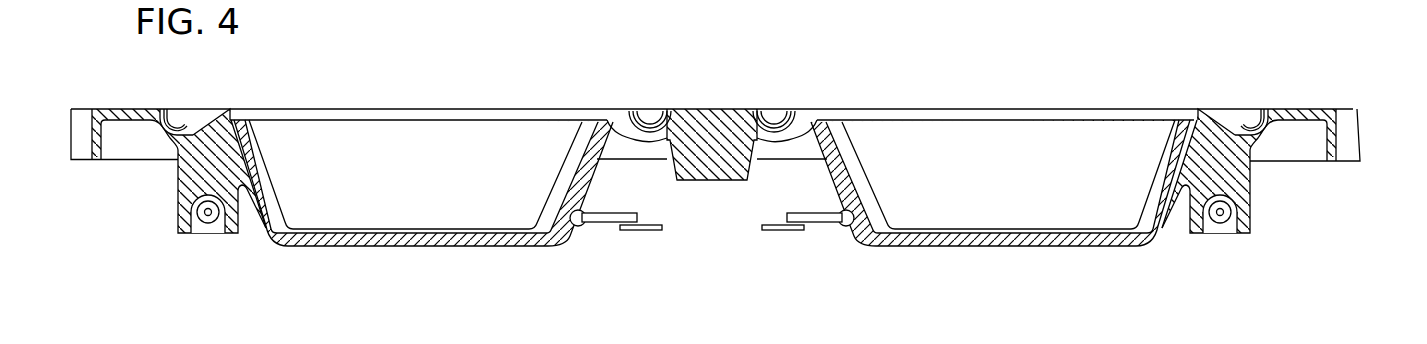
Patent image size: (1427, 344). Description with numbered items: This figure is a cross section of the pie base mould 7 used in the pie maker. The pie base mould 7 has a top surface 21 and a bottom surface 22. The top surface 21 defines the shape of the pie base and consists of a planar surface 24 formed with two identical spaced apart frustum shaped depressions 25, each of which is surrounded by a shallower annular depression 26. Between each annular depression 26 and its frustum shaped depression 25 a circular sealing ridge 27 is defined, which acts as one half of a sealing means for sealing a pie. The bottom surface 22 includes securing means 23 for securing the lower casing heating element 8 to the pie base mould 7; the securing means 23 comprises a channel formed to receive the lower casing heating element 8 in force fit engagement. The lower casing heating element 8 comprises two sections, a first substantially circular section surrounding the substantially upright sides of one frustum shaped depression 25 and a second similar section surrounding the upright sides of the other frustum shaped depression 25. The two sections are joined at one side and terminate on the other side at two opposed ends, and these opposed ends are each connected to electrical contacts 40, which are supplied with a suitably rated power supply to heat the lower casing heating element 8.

The pie base mould 7 is at (1360, 138).
The lower casing heating element 8 is at (208, 230).
The top surface 21 is at (1300, 109).
The bottom surface 22 is at (1298, 122).
The securing means 23 is at (1253, 218).
The planar surface 24 is at (711, 108).
The frustum shaped depression 25 is at (245, 167).
The annular depression 26 is at (176, 111).
The sealing ridge 27 is at (228, 118).
The electrical contacts 40 is at (650, 235).